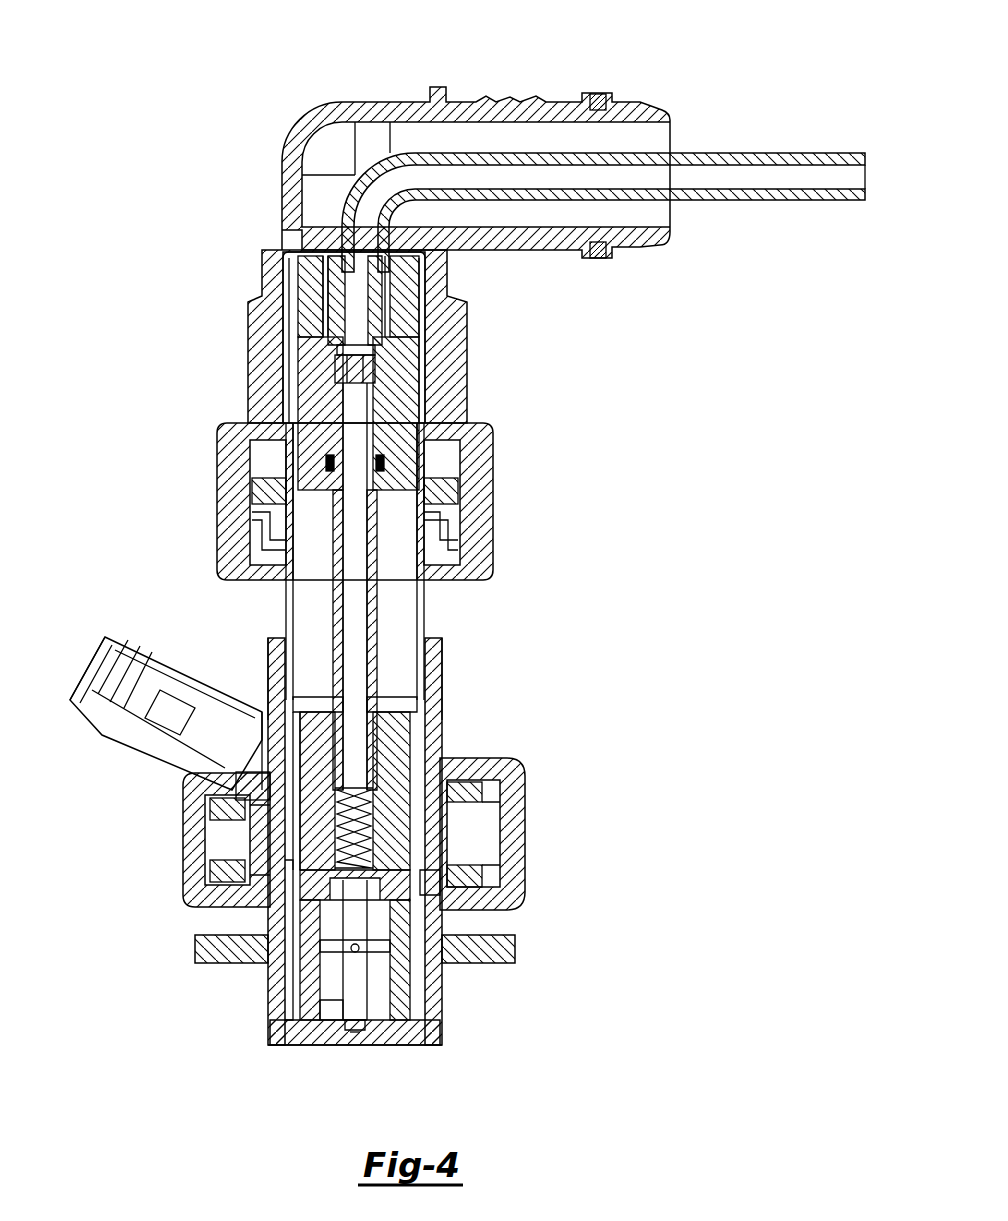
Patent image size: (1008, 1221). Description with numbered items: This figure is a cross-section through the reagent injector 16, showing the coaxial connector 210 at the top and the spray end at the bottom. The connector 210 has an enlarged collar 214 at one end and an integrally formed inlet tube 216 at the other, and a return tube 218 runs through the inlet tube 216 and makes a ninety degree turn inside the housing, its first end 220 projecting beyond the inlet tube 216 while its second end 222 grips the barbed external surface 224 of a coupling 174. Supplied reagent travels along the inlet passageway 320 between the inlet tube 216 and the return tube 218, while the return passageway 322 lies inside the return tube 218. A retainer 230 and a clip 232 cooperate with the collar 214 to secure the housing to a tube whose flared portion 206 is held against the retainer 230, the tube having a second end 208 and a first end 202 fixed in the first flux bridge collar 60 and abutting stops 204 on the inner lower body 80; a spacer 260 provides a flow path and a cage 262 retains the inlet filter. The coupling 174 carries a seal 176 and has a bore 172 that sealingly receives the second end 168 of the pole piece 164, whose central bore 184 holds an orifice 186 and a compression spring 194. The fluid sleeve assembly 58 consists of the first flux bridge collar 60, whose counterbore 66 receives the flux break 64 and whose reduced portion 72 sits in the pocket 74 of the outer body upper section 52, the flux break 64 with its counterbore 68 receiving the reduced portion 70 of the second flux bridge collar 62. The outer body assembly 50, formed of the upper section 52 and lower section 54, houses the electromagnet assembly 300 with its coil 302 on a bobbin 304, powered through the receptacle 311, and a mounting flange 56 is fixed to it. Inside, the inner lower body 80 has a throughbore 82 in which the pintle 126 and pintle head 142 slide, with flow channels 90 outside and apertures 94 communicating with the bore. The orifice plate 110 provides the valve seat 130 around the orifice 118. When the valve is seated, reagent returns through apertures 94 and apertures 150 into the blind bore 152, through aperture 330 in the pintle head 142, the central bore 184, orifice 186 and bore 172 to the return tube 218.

The reagent injector 16 is at (226, 92).
The coaxial connector 210 is at (318, 104).
The inlet tube 216 is at (560, 98).
The return tube 218 is at (645, 205).
The first end of return tube 220 is at (812, 152).
The inlet passageway 320 is at (603, 180).
The return passageway 322 is at (772, 186).
The barbed external surface 224 is at (334, 262).
The second end of tube 208 is at (283, 262).
The second end of return tube 222 is at (305, 285).
The spacer 260 is at (405, 280).
The second end of pole piece 168 is at (335, 365).
The coupling 174 is at (400, 372).
The orifice 186 is at (352, 388).
The bore 172 is at (340, 420).
The retainer 230 is at (453, 432).
The radially outwardly flared portion 206 is at (272, 473).
The clip 232 is at (470, 490).
The enlarged collar 214 is at (475, 520).
The seal 176 is at (327, 480).
The central bore 184 is at (357, 582).
The cage 262 is at (323, 615).
The first flux bridge collar 60 is at (433, 652).
The stops 204 is at (420, 697).
The first end of tube 202 is at (427, 685).
The fluid sleeve assembly 58 is at (411, 829).
The pocket 74 is at (270, 725).
The flow channels 90 is at (288, 730).
The receptacle 311 is at (127, 670).
The reduced outer diameter portion 72 is at (228, 746).
The elongated inner lower body 80 is at (418, 732).
The elongated throughbore 82 is at (397, 755).
The counterbore 66 is at (433, 787).
The outer body upper section 52 is at (518, 785).
The electromagnet assembly 300 is at (205, 800).
The flux break 64 is at (455, 808).
The outer body assembly 50 is at (533, 828).
The pole piece 164 is at (315, 810).
The compression spring 194 is at (445, 840).
The coil of wire 302 is at (280, 845).
The outer body lower section 54 is at (518, 872).
The bobbin 304 is at (265, 870).
The counterbore 68 is at (460, 900).
The pintle head 142 is at (430, 908).
The reduced outer diameter portion 70 is at (267, 912).
The apertures 94 is at (323, 952).
The aperture 330 is at (375, 935).
The mounting flange 56 is at (490, 957).
The apertures 150 is at (297, 955).
The pintle 126 is at (370, 1003).
The blind bore 152 is at (307, 1032).
The valve seat 130 is at (352, 1033).
The second flux bridge collar 62 is at (437, 1032).
The orifice plate 110 is at (364, 1057).
The orifice 118 is at (355, 1035).